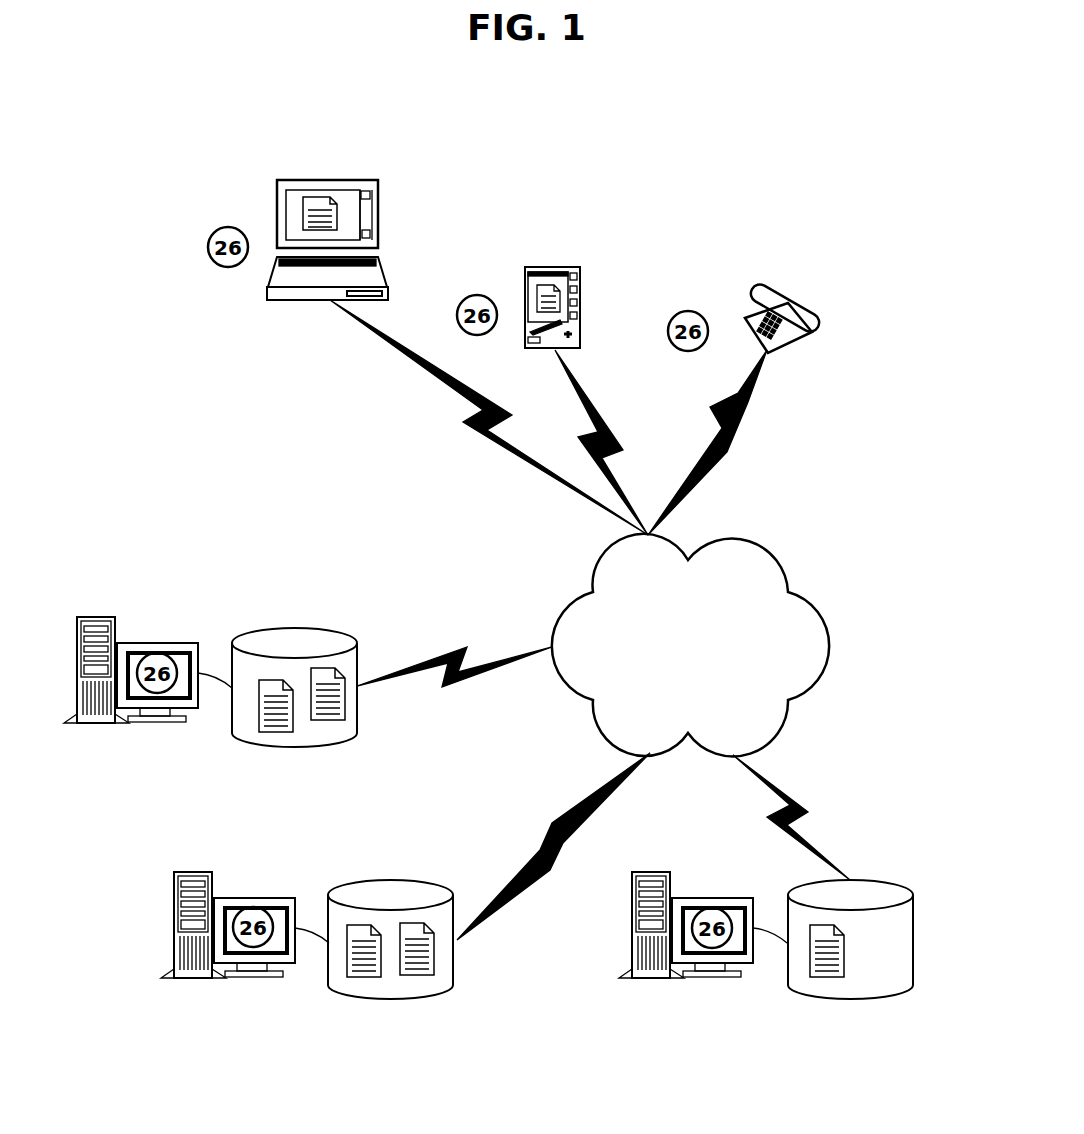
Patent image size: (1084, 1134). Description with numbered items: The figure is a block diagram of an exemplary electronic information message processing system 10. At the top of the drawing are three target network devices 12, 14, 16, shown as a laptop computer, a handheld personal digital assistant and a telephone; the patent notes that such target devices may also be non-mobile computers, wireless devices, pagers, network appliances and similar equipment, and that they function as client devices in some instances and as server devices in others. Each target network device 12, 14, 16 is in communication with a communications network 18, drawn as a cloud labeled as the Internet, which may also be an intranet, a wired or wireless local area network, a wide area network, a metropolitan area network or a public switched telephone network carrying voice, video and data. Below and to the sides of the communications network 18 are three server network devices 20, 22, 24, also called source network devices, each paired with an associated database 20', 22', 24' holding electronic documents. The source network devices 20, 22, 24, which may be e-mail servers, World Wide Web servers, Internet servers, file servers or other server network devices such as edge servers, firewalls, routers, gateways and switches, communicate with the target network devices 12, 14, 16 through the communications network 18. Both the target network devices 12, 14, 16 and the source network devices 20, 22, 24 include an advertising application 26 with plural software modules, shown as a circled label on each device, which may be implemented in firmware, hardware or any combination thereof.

The electronic information system 10 is at (772, 117).
The target network device 12 is at (330, 180).
The target network device 14 is at (578, 268).
The target network device 16 is at (793, 293).
The communications network 18 is at (828, 647).
The server network device 20 is at (148, 665).
The database 20' is at (297, 666).
The server network device 22 is at (245, 914).
The database 22' is at (393, 920).
The server network device 24 is at (703, 913).
The database 24' is at (850, 982).
The advertising application 26 is at (248, 247).